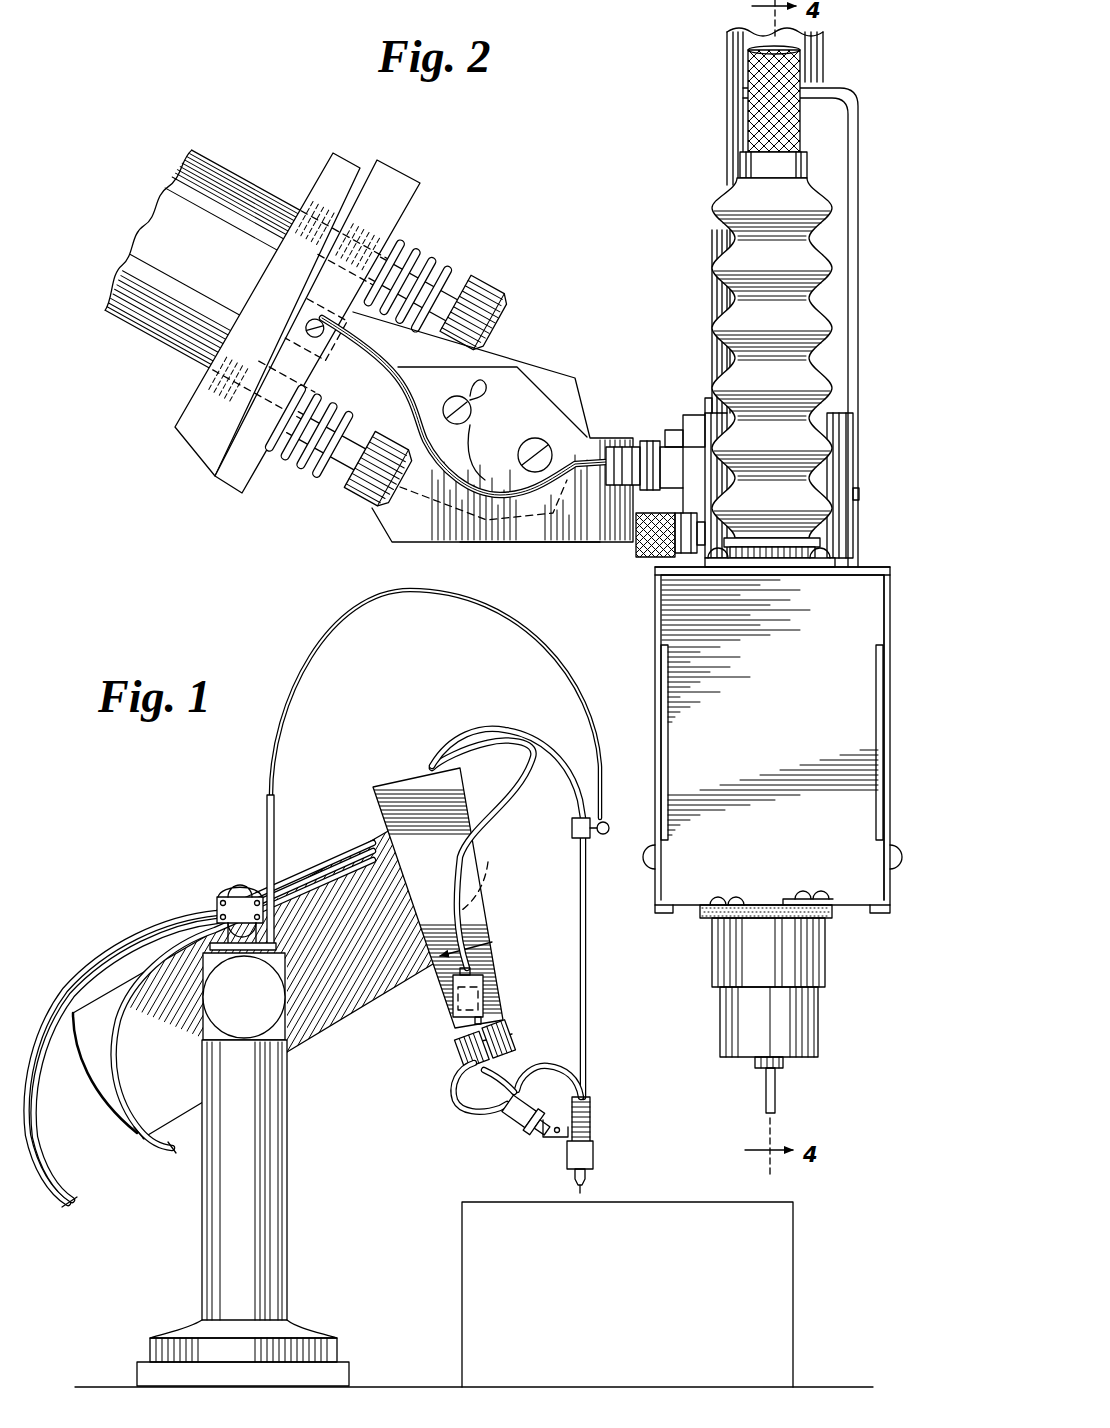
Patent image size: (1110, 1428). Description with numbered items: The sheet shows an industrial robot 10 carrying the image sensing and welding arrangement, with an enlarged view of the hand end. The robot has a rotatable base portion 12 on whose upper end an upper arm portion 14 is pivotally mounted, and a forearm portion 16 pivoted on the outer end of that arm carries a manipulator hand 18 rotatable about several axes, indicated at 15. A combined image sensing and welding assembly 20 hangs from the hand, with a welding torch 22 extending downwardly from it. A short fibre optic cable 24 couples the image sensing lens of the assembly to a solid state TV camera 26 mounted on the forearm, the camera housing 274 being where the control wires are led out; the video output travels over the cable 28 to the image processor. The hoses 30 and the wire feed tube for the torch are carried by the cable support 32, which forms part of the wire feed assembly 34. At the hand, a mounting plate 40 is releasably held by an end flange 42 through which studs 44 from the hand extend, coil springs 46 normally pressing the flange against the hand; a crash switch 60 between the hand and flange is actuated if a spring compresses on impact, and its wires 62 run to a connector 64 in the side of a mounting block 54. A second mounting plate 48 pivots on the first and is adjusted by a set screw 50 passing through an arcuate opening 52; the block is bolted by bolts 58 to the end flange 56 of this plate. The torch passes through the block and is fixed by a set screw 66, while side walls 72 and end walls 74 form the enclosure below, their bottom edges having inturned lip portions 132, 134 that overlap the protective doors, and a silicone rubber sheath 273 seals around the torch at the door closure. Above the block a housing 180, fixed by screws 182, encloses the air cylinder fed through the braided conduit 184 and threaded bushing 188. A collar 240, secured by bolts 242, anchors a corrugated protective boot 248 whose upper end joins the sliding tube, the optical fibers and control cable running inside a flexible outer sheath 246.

In FIG. 1, the industrial robot 10 is at (372, 1093).
In FIG. 1, the rotatable base portion 12 is at (287, 1224).
In FIG. 1, the upper arm portion 14 is at (370, 995).
In FIG. 1, the rotation axes 15 is at (495, 985).
In FIG. 1, the forearm portion 16 is at (456, 795).
In FIG. 2, the manipulator hand 18 is at (178, 440).
In FIG. 1, the manipulator hand 18 is at (507, 1124).
In FIG. 2, the combined image sensing and welding assembly 20 is at (893, 729).
In FIG. 1, the combined image sensing and welding assembly 20 is at (594, 1152).
In FIG. 2, the welding torch 22 is at (818, 1022).
In FIG. 1, the welding torch 22 is at (574, 1178).
In FIG. 2, the fibre optic cable 24 is at (746, 120).
In FIG. 1, the fibre optic cable 24 is at (537, 1070).
In FIG. 1, the solid state TV camera 26 is at (462, 1003).
In FIG. 1, the cable 28 is at (493, 828).
In FIG. 2, the hoses 30 is at (745, 41).
In FIG. 1, the hoses 30 is at (590, 1026).
In FIG. 1, the cable support 32 is at (512, 620).
In FIG. 1, the wire feed assembly 34 is at (246, 894).
In FIG. 2, the mounting plate 40 is at (540, 364).
In FIG. 2, the end flange 42 is at (403, 178).
In FIG. 2, the studs 44 is at (493, 288).
In FIG. 2, the coil springs 46 is at (437, 254).
In FIG. 2, the second mounting plate 48 is at (520, 546).
In FIG. 2, the set screw 50 is at (470, 424).
In FIG. 2, the arcuate opening 52 is at (482, 392).
In FIG. 2, the mounting block 54 is at (857, 450).
In FIG. 2, the end flange 56 is at (700, 416).
In FIG. 2, the bolts 58 is at (678, 430).
In FIG. 2, the crash switch 60 is at (347, 322).
In FIG. 2, the wires 62 is at (482, 522).
In FIG. 2, the connector 64 is at (645, 452).
In FIG. 2, the set screw 66 is at (860, 496).
In FIG. 2, the side walls 72 is at (655, 692).
In FIG. 2, the end walls 74 is at (865, 808).
In FIG. 2, the inturned lip portion 132 is at (665, 912).
In FIG. 2, the inturned lip portion 134 is at (878, 906).
In FIG. 2, the housing 180 is at (855, 212).
In FIG. 2, the screws 182 is at (713, 405).
In FIG. 2, the braided conduit 184 is at (650, 556).
In FIG. 2, the threaded bushing 188 is at (692, 512).
In FIG. 2, the collar 240 is at (817, 570).
In FIG. 2, the bolts 242 is at (718, 580).
In FIG. 2, the flexible outer sheath 246 is at (802, 128).
In FIG. 2, the corrugated protective boot 248 is at (830, 336).
In FIG. 2, the silicone rubber sheath 273 is at (795, 912).
In FIG. 1, the camera housing 274 is at (480, 992).